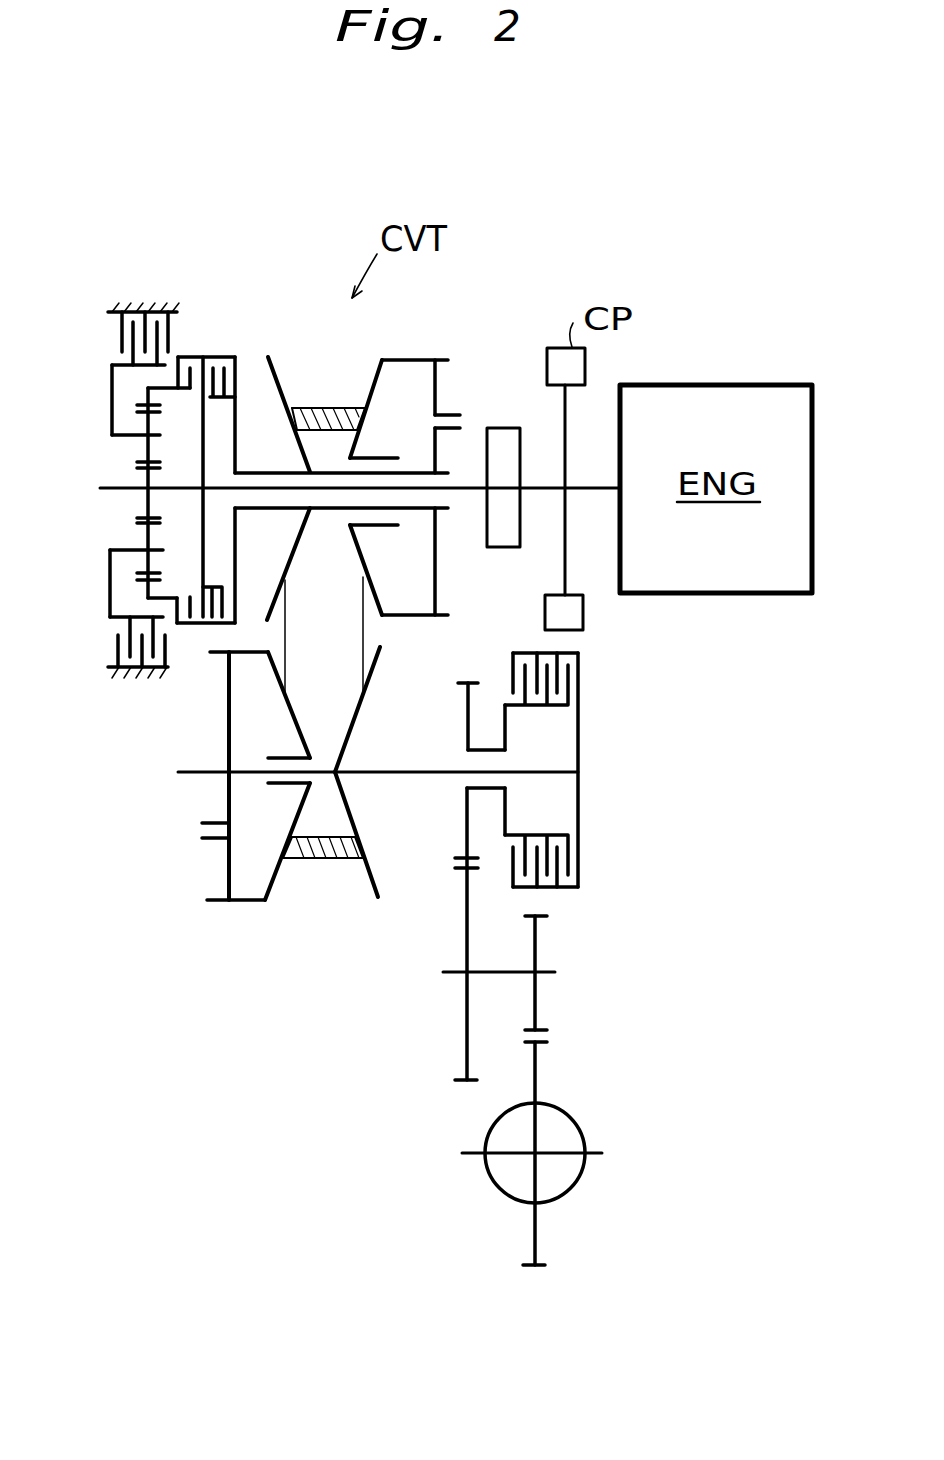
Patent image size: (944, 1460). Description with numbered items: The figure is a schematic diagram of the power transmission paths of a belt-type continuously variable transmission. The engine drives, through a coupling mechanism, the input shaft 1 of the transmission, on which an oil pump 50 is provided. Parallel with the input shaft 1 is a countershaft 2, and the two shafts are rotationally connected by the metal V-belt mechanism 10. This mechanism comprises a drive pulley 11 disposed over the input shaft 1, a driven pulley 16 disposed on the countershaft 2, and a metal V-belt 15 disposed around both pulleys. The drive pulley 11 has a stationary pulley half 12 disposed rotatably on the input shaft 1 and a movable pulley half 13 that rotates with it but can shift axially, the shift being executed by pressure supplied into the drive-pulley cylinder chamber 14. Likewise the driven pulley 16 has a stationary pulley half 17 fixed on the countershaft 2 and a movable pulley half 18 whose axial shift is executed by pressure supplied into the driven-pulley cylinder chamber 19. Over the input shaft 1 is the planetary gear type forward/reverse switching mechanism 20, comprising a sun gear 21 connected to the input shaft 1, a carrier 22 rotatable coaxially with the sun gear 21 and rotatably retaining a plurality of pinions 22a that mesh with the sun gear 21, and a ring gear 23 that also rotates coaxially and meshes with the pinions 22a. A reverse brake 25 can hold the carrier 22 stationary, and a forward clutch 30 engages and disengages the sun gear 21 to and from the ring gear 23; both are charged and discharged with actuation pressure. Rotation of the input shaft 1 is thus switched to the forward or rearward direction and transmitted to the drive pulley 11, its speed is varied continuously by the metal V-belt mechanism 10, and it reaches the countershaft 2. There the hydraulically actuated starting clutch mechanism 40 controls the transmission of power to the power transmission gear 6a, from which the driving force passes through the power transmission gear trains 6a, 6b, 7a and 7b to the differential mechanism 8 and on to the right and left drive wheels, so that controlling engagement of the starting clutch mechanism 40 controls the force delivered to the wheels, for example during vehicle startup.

The input shaft 1 is at (463, 497).
The countershaft 2 is at (397, 777).
The power transmission gear 6a is at (465, 700).
The power transmission gear 6b is at (462, 1078).
The power transmission gear 7a is at (537, 945).
The power transmission gear 7b is at (537, 1068).
The differential mechanism 8 is at (492, 1182).
The metal V-belt mechanism 10 is at (415, 348).
The drive pulley 11 is at (445, 603).
The stationary pulley half 12 is at (277, 372).
The movable pulley half 13 is at (370, 383).
The drive-pulley cylinder chamber 14 is at (416, 437).
The metal V-belt 15 is at (367, 638).
The driven pulley 16 is at (265, 907).
The stationary pulley half 17 is at (373, 875).
The movable pulley half 18 is at (277, 875).
The driven-pulley cylinder chamber 19 is at (278, 746).
The forward/reverse switching mechanism 20 is at (187, 323).
The sun gear 21 is at (145, 505).
The carrier 22 is at (123, 438).
The pinions 22a is at (145, 448).
The ring gear 23 is at (145, 395).
The reverse brake 25 is at (123, 337).
The forward clutch 30 is at (208, 357).
The starting clutch mechanism 40 is at (583, 848).
The oil pump 50 is at (503, 428).